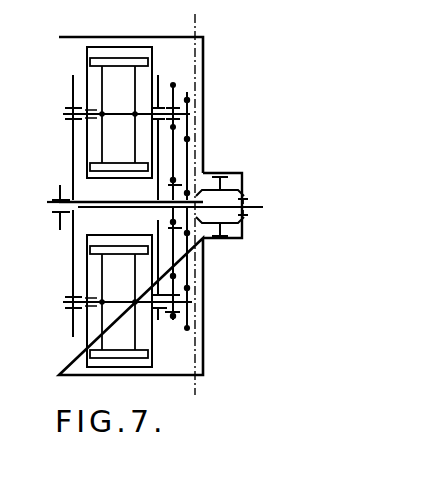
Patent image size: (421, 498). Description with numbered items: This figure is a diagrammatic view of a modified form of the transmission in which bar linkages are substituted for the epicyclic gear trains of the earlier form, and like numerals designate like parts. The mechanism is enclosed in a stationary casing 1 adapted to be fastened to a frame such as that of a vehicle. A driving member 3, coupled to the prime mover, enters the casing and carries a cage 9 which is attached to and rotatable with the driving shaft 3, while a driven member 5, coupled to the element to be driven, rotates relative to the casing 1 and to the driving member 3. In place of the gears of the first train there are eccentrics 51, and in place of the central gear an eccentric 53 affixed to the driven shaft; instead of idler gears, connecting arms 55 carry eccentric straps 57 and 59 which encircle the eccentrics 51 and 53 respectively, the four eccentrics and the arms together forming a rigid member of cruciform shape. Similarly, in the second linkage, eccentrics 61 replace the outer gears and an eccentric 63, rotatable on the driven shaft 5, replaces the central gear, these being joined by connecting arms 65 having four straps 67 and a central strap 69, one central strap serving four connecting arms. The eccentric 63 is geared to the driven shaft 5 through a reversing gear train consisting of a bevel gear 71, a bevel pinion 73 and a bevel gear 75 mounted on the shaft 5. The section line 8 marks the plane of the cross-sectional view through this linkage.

The stationary casing 1 is at (97, 36).
The driving member 3 is at (54, 202).
The driven member 5 is at (258, 206).
The section line 8- 8 is at (173, 22).
The cage 9 is at (73, 88).
The eccentrics 51 is at (178, 88).
The eccentric 53 is at (175, 192).
The connecting arms 55 is at (176, 155).
The eccentric straps 57 is at (182, 68).
The eccentric strap 59 is at (172, 179).
The eccentrics 61 is at (189, 125).
The eccentric 63 is at (189, 235).
The connecting arms 65 is at (189, 289).
The straps 67 is at (188, 97).
The strap 69 is at (186, 271).
The bevel gear 71 is at (206, 198).
The bevel pinion 73 is at (228, 176).
The bevel gear 75 is at (245, 193).